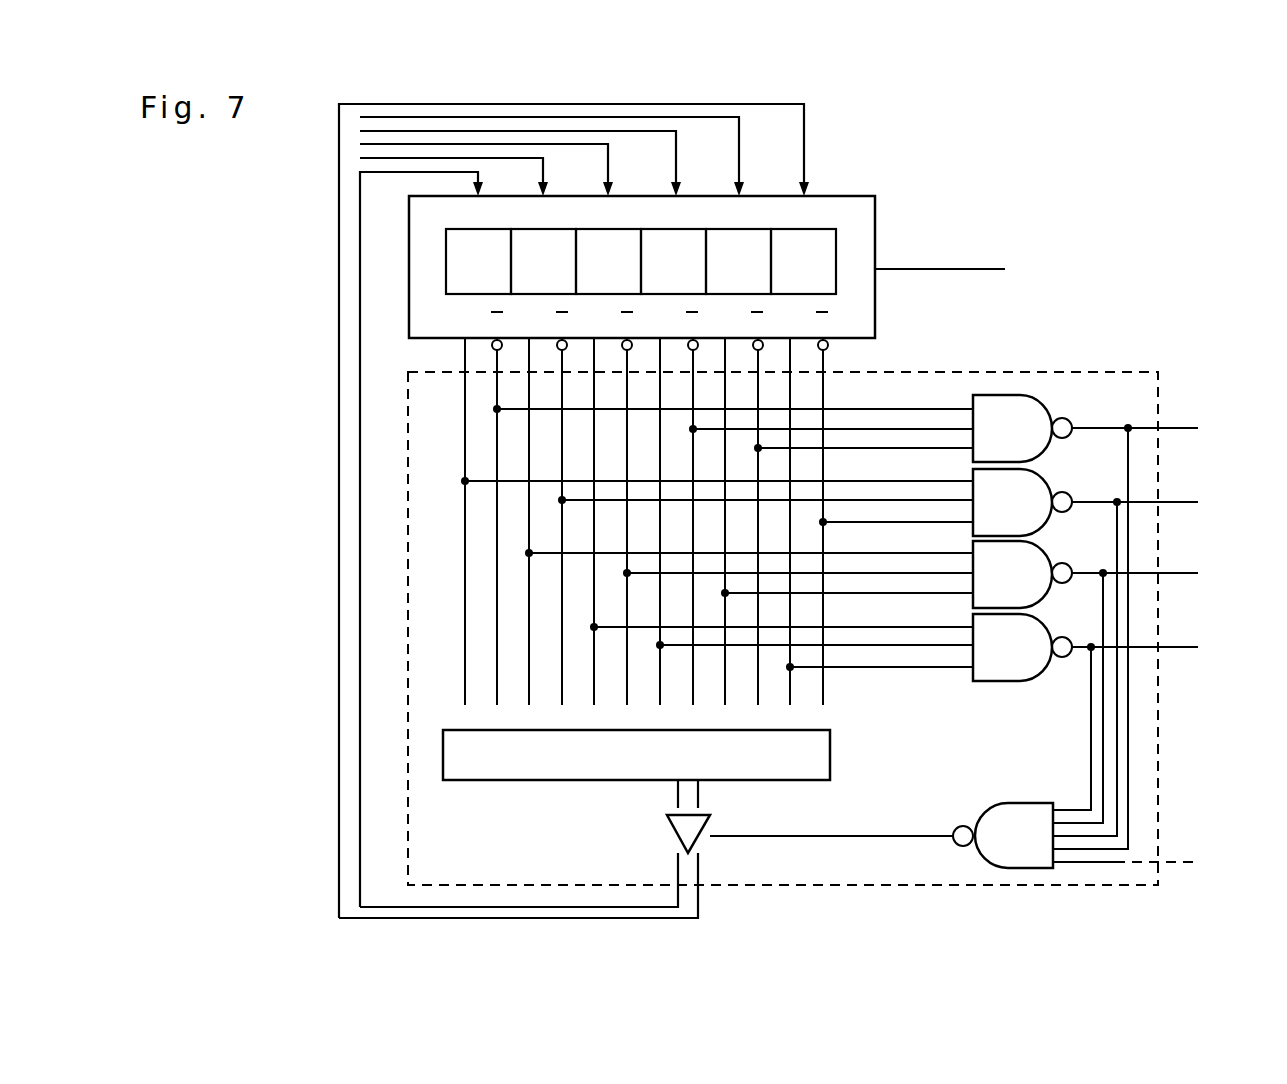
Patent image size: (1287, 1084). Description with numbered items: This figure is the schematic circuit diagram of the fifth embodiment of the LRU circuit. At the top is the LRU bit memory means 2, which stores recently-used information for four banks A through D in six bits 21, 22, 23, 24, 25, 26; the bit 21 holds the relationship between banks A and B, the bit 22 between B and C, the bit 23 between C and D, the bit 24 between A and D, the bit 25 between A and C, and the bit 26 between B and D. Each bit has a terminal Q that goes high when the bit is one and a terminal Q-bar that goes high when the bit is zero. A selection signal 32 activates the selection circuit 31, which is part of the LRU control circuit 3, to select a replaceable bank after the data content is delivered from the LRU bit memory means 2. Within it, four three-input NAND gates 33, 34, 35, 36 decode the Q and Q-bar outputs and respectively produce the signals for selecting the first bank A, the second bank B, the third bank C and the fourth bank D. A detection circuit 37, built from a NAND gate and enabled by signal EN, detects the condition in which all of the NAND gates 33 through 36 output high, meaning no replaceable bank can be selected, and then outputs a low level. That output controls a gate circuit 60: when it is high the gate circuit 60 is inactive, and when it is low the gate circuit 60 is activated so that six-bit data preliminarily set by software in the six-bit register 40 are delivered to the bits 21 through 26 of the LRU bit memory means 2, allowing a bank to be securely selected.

The LRU bit memory means 2 is at (849, 184).
The LRU control circuit 3 is at (849, 896).
The bit 21 is at (476, 228).
The bit 22 is at (542, 228).
The bit 23 is at (607, 228).
The bit 24 is at (673, 228).
The bit 25 is at (739, 228).
The bit 26 is at (804, 228).
The selection circuit 31 is at (425, 727).
The selection signal 32 is at (960, 269).
The NAND gate 33 is at (1028, 406).
The NAND gate 34 is at (1038, 482).
The NAND gate 35 is at (1040, 558).
The NAND gate 36 is at (1030, 630).
The detection circuit 37 is at (1023, 864).
The 6-bit register 40 is at (832, 748).
The gate circuit 60 is at (670, 832).